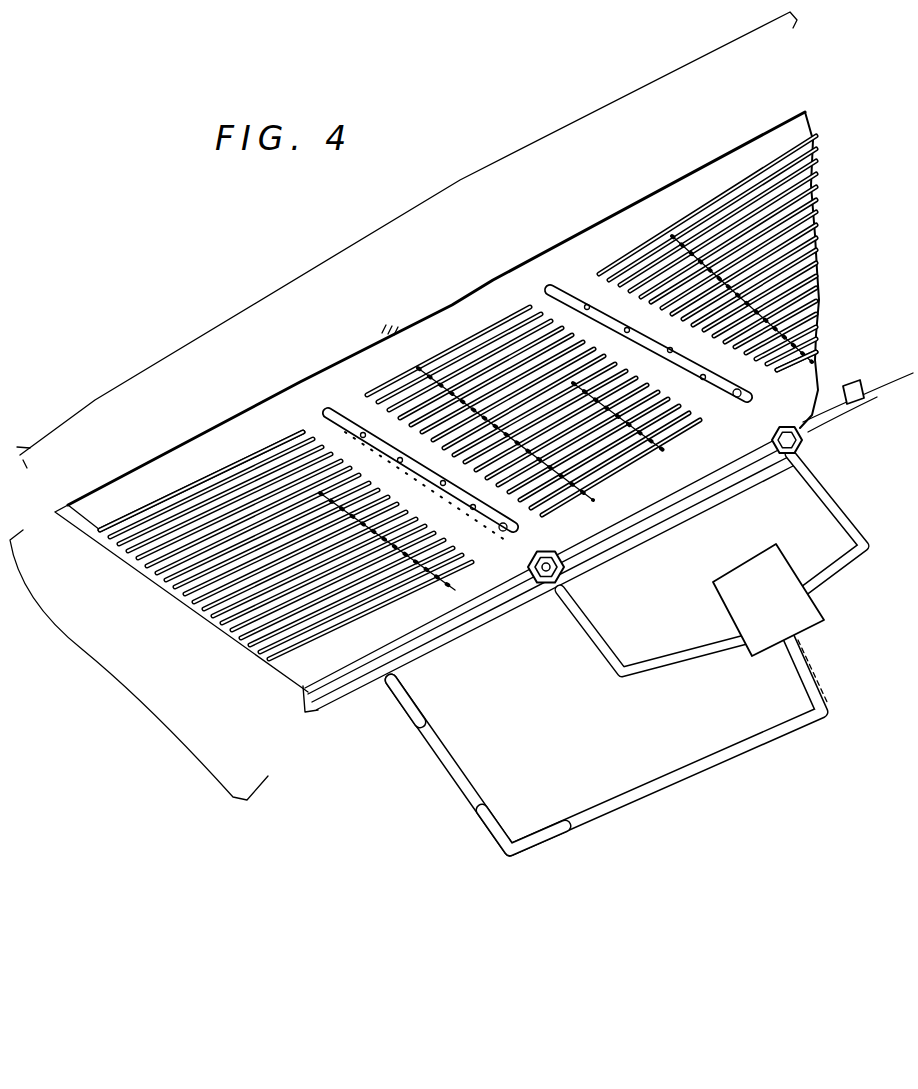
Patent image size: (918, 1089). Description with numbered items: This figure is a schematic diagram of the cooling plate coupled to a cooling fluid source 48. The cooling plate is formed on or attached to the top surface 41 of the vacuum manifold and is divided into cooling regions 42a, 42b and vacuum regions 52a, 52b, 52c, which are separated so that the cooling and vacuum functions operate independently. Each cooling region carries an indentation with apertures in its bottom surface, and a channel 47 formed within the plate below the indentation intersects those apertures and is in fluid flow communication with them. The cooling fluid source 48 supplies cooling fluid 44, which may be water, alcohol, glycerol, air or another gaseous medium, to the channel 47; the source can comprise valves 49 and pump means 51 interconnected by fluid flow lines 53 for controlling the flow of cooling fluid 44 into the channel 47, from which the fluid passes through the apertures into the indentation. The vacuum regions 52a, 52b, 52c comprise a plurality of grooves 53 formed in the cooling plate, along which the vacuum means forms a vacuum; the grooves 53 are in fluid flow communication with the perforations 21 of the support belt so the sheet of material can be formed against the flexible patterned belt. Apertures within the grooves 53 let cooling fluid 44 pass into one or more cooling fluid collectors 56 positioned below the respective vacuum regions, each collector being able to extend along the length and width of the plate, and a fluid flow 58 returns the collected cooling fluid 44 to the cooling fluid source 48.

The perforations 21 is at (407, 240).
The top surface 41 is at (139, 665).
The cooling region 42a is at (558, 282).
The cooling region 42b is at (328, 412).
The cooling fluid 44 is at (478, 634).
The channel 47 is at (497, 530).
The cooling fluid source 48 is at (624, 728).
The valves 49 is at (533, 597).
The pump means 51 is at (775, 655).
The vacuum region 52a is at (670, 228).
The vacuum region 52b is at (420, 348).
The vacuum region 52c is at (235, 462).
The grooves 53 is at (158, 500).
The cooling fluid collector 56 is at (360, 688).
The fluid flow 58 is at (553, 850).